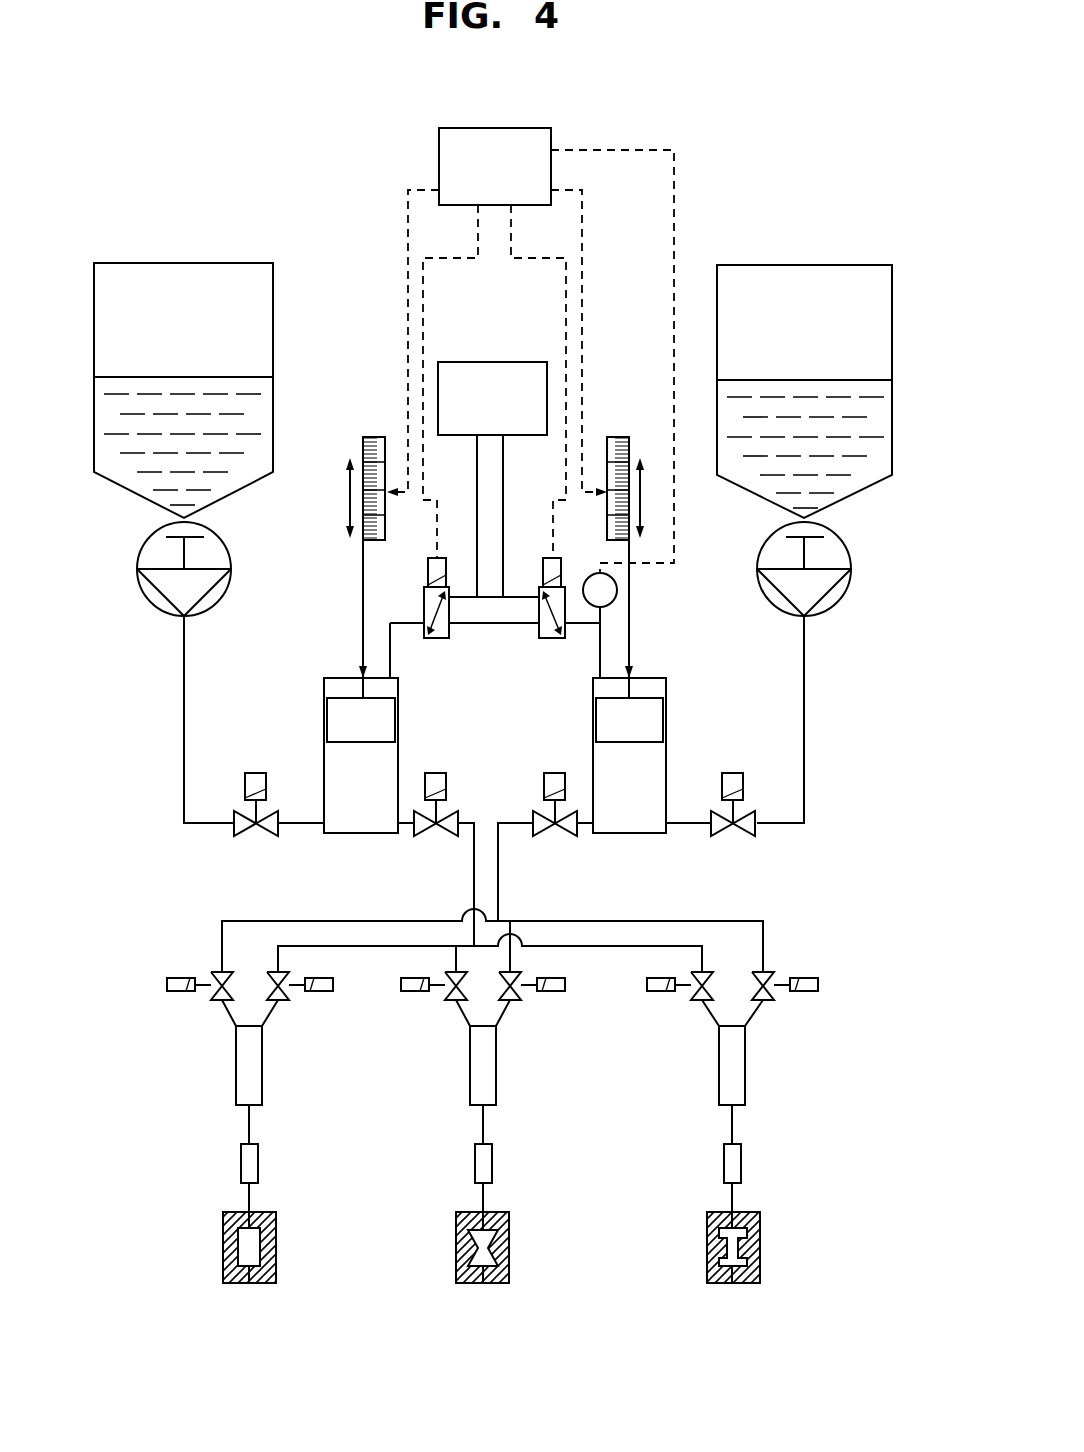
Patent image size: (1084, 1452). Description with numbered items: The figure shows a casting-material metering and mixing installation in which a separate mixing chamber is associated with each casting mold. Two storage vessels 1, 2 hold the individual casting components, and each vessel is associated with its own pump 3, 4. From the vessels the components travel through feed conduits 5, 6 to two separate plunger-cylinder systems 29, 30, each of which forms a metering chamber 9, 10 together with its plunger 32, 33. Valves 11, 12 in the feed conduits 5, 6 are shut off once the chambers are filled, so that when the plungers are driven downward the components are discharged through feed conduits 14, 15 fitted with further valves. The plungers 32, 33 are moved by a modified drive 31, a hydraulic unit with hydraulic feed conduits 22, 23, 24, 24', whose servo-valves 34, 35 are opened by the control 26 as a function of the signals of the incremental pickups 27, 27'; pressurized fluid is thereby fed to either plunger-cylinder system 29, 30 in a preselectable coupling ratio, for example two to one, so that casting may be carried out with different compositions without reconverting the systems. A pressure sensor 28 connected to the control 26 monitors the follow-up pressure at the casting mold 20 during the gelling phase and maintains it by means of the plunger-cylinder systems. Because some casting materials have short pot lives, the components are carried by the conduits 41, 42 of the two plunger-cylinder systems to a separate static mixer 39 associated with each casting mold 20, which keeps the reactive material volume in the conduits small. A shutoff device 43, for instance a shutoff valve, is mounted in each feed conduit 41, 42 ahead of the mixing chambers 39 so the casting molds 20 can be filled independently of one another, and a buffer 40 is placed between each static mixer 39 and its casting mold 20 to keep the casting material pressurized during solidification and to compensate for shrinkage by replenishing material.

The storage vessel 1 is at (194, 327).
The storage vessel 2 is at (808, 339).
The pump 3 is at (140, 620).
The pump 4 is at (846, 628).
The feed conduit 5 is at (162, 796).
The feed conduit 6 is at (824, 731).
The metering chamber 9 is at (361, 686).
The metering chamber 10 is at (629, 686).
The valve 11 is at (256, 838).
The valve 12 is at (733, 838).
The feed conduit 14 is at (436, 838).
The feed conduit 15 is at (555, 838).
The casting mold 20 is at (262, 1283).
The feed conduit 22 is at (502, 574).
The feed conduit 23 is at (478, 574).
The feed conduit 24 is at (464, 674).
The feed conduit 24' is at (556, 666).
The control 26 is at (513, 183).
The incremental pickup 27 is at (410, 488).
The incremental pickup 27' is at (578, 488).
The pressure sensor 28 is at (618, 593).
The plunger-cylinder system 29 is at (319, 686).
The plunger-cylinder system 30 is at (672, 686).
The drive 31 is at (511, 420).
The plunger 32 is at (361, 641).
The plunger 33 is at (629, 641).
The servo-valve 34 is at (424, 604).
The servo-valve 35 is at (566, 597).
The static mixer 39 is at (250, 1072).
The buffer 40 is at (243, 1166).
The conduit 41 is at (360, 921).
The conduit 42 is at (358, 946).
The shutoff device 43 is at (212, 998).